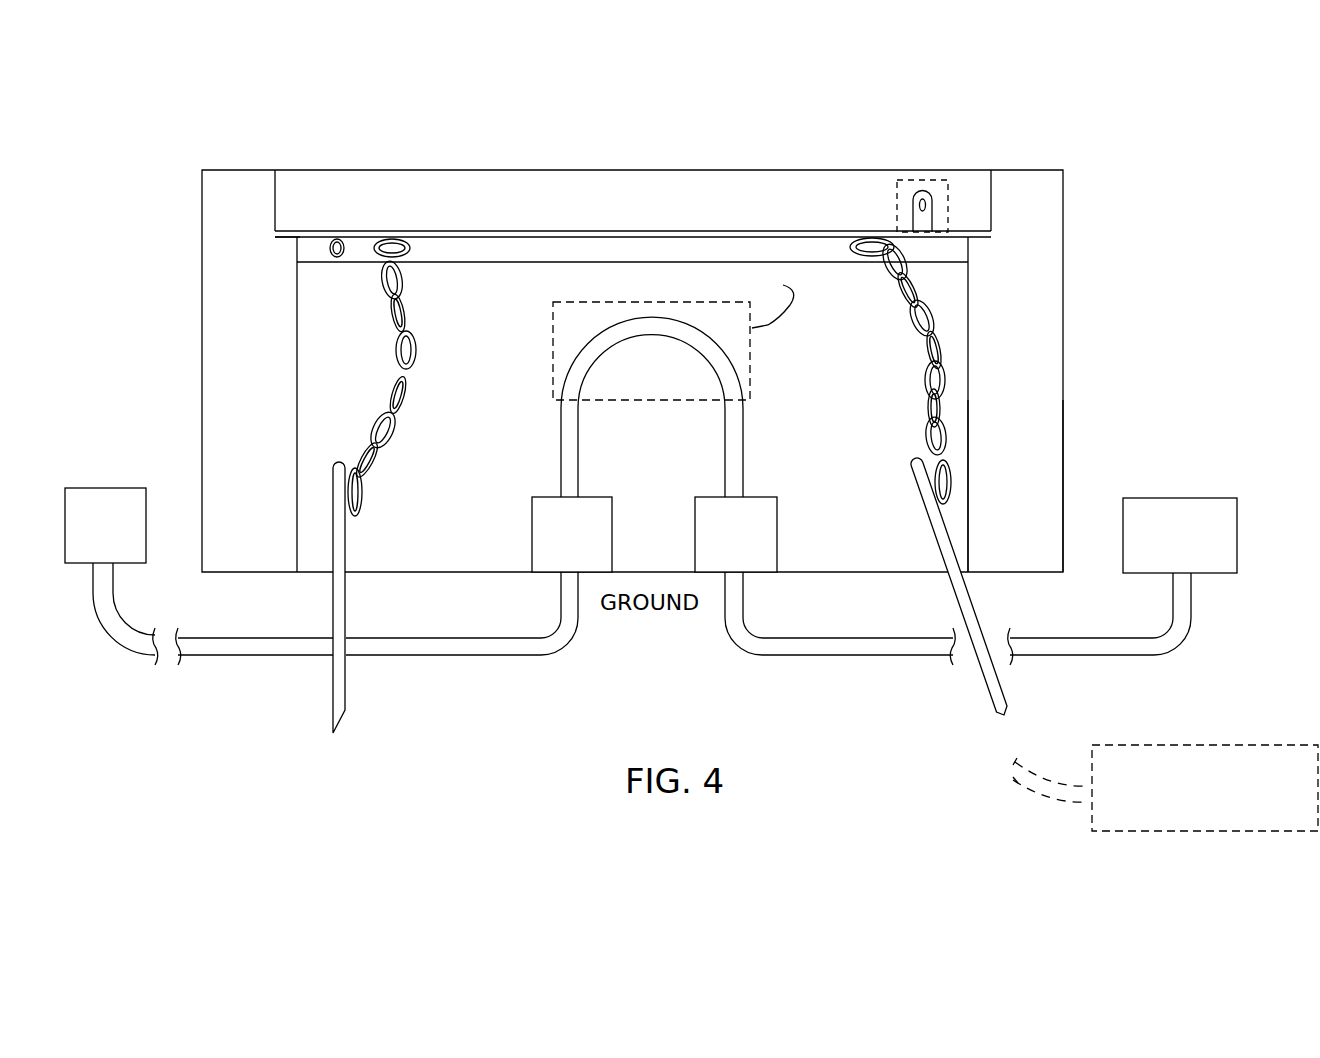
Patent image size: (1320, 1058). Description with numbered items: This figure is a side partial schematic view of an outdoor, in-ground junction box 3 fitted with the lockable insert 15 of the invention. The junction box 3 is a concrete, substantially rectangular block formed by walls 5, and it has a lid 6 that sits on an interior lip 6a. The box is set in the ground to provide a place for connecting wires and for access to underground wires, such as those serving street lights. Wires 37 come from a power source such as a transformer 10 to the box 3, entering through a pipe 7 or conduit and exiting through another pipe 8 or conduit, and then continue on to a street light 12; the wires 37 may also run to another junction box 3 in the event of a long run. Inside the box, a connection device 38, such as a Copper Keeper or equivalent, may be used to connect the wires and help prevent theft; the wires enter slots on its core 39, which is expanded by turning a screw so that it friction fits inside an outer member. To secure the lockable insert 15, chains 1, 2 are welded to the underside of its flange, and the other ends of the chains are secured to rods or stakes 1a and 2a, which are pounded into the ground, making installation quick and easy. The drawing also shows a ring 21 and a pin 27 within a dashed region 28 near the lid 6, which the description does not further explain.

The chain 1 is at (416, 322).
The stake 1a is at (347, 540).
The chain 2 is at (912, 345).
The stake 2a is at (956, 600).
The junction box 3 is at (1066, 234).
The walls 5 is at (1066, 372).
The lid 6 is at (642, 219).
The interior lip 6a is at (290, 238).
The pipe 7 is at (778, 535).
The pipe 8 is at (613, 535).
The transformer 10 is at (1228, 744).
The street light 12 is at (107, 487).
The lockable insert 15 is at (507, 268).
The ring 21 is at (337, 258).
The pin 27 is at (918, 205).
The slot 28 is at (926, 180).
The wires 37 is at (746, 458).
The device 38 is at (655, 400).
The core 39 is at (1136, 497).